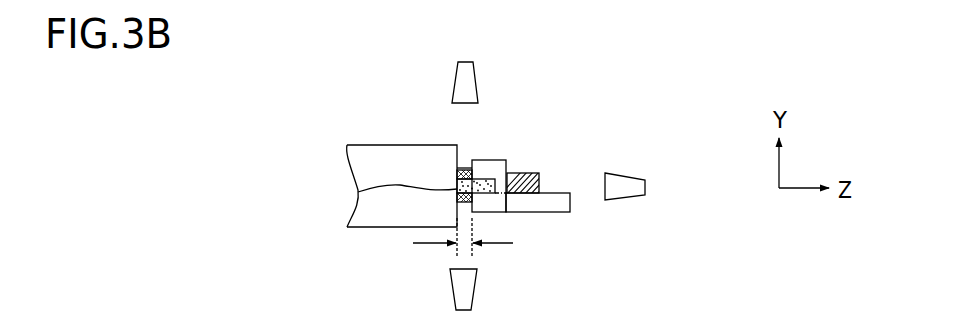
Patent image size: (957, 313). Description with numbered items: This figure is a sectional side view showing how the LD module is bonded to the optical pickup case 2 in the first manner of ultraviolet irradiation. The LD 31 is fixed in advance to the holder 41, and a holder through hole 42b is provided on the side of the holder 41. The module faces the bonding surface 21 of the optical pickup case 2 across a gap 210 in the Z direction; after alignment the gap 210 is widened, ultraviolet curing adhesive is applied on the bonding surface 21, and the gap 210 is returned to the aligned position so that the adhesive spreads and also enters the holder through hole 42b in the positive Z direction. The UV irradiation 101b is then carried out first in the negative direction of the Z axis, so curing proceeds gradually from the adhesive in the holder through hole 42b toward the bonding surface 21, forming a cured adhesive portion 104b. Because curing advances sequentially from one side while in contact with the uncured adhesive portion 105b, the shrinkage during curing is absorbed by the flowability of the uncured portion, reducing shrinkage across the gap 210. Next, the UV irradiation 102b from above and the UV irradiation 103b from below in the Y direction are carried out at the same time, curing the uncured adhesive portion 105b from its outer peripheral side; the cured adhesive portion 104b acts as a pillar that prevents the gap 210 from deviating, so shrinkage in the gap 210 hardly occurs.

The optical pickup case 2 is at (350, 157).
The bonding surface 21 is at (465, 168).
The LD 31 is at (540, 173).
The holder 41 is at (568, 207).
The holder through hole 42b is at (504, 180).
The UV irradiation 101b is at (645, 187).
The UV irradiation from above 102b is at (452, 80).
The UV irradiation from below 103b is at (450, 298).
The cured adhesive portion 104b is at (358, 192).
The uncured adhesive portion 105b is at (467, 170).
The gap 210 is at (488, 237).